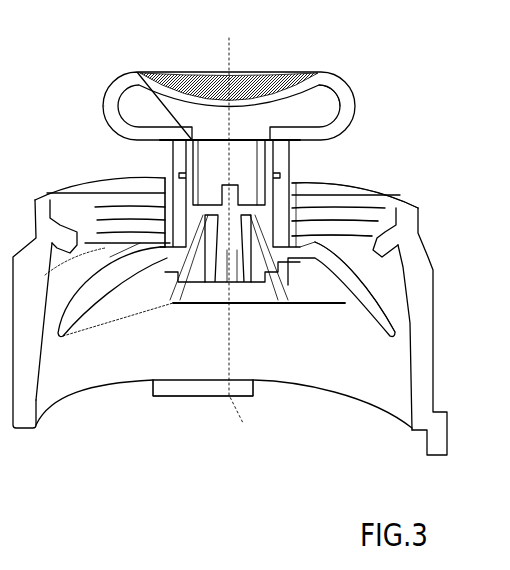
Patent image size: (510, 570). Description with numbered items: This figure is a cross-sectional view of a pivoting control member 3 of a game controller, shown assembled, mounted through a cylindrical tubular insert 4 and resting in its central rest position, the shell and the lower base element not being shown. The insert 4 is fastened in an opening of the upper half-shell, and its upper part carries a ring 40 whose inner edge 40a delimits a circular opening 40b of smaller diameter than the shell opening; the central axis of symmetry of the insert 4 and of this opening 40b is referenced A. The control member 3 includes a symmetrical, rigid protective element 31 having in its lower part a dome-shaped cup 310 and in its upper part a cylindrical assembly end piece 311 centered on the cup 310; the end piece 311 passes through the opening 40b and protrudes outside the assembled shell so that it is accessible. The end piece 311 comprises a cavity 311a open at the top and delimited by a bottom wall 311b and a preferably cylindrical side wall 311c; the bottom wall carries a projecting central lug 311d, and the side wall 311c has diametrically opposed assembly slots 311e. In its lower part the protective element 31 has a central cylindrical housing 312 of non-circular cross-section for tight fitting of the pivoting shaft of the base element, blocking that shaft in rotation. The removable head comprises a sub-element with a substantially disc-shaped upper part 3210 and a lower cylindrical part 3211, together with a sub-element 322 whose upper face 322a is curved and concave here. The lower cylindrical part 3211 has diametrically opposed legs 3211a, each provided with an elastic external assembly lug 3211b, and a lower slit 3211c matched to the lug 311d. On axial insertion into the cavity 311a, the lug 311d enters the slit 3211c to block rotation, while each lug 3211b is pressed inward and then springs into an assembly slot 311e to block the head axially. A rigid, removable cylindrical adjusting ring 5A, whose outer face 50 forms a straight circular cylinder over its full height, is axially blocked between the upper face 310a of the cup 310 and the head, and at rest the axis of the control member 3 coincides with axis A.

The pivoting control member 3 is at (419, 101).
The cylindrical tubular insert 4 is at (423, 297).
The protective element 31 is at (407, 267).
The ring 40 is at (412, 206).
The inner edge 40a is at (385, 193).
The circular opening 40b is at (342, 238).
The outer face 50 is at (333, 222).
The dome-shaped cup 310 is at (390, 323).
The upper face of the cup 310a is at (155, 262).
The cylindrical assembly end piece 311 is at (120, 187).
The cavity 311a is at (229, 161).
The bottom wall 311b is at (177, 252).
The side wall 311c is at (165, 173).
The projecting central lug 311d is at (217, 284).
The assembly slots 311e is at (167, 150).
The central cylindrical housing 312 is at (238, 287).
The sub-element of the head 322 is at (334, 110).
The upper face 322a is at (280, 72).
The disc-shaped upper part 3210 is at (340, 100).
The lower cylindrical part 3211 is at (347, 142).
The legs 3211a is at (141, 320).
The external assembly lug 3211b is at (198, 140).
The lower slit 3211c is at (215, 230).
The adjusting ring 5A is at (320, 275).
The central axis of symmetry A is at (216, 410).